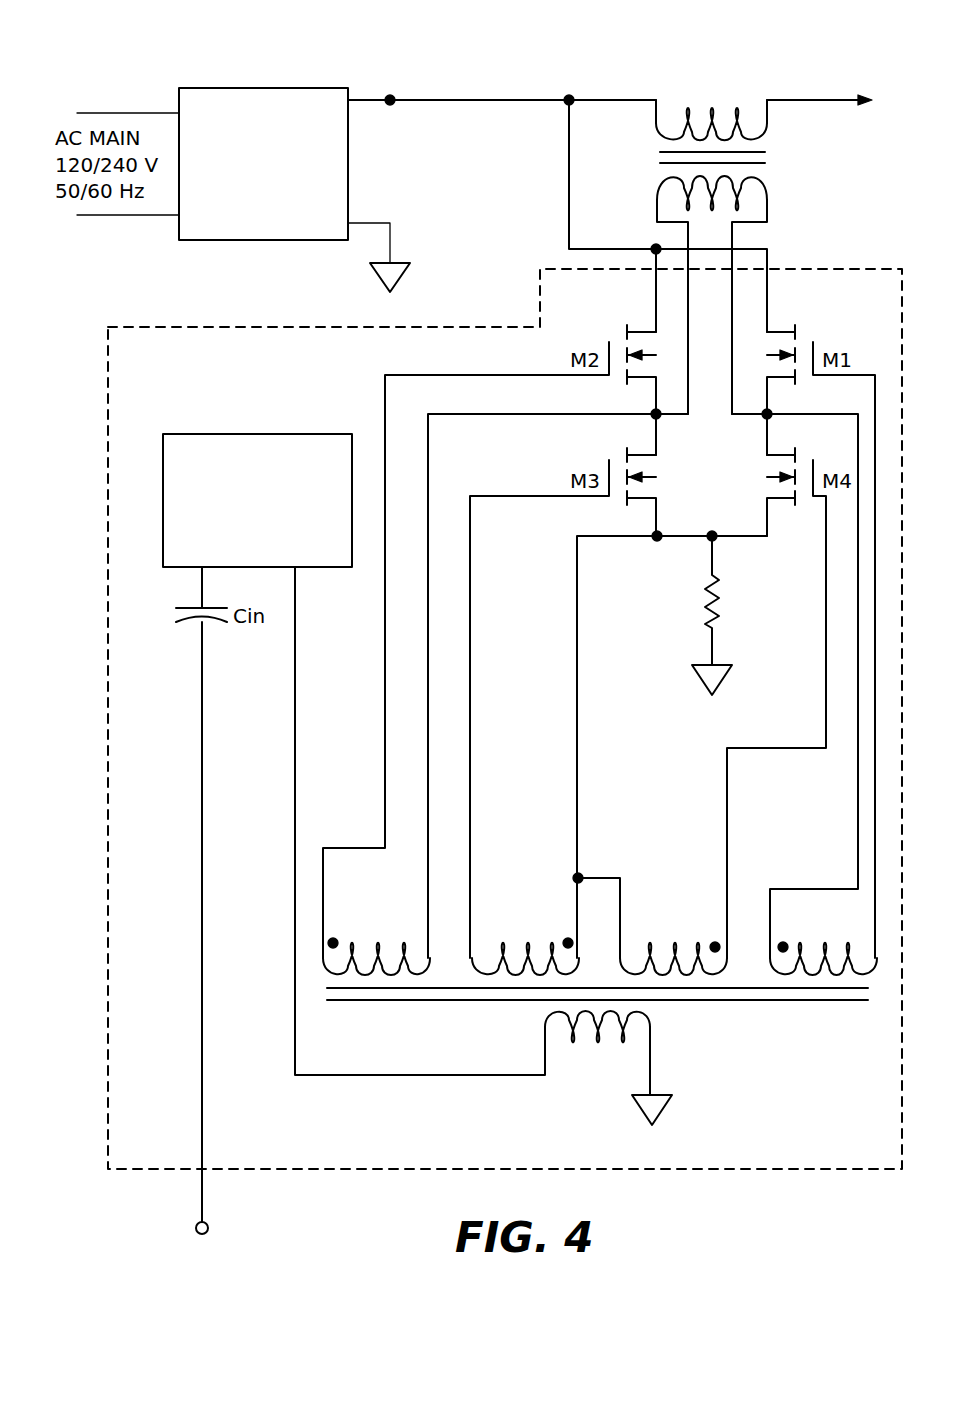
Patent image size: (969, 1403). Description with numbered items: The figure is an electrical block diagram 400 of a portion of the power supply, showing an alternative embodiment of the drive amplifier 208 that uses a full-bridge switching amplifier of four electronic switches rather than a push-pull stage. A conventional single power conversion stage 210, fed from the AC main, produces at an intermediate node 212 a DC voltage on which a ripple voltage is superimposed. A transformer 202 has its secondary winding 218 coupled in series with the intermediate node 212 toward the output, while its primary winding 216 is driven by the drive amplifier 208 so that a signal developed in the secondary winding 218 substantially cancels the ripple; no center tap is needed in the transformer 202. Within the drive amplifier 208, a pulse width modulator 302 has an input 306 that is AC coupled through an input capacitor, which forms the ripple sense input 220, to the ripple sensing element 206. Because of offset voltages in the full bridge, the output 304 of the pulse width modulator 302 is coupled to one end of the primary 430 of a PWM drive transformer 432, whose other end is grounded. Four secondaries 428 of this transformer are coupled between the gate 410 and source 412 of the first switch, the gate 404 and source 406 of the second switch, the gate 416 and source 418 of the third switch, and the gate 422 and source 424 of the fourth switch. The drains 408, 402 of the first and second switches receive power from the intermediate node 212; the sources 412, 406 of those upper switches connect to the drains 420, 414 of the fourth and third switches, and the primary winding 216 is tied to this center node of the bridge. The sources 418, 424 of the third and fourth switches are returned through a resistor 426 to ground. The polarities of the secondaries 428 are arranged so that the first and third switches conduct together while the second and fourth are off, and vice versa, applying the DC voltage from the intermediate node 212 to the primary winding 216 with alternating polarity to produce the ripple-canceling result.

The single power conversion stage 210 is at (298, 87).
The intermediate node 212 is at (390, 96).
The secondary winding 218 is at (687, 115).
The primary winding 216 is at (655, 188).
The transformer 202 is at (703, 238).
The drive amplifier 208 is at (275, 325).
The pulse width modulator 302 is at (263, 433).
The output of the pulse width modulator 304 is at (297, 570).
The input of the pulse width modulator 306 is at (200, 577).
The drain of electronic switch M2 402 is at (642, 330).
The gate of electronic switch M2 404 is at (608, 342).
The source of electronic switch M2 406 is at (640, 385).
The drain of electronic switch M1 408 is at (783, 333).
The gate of electronic switch M1 410 is at (817, 342).
The source of electronic switch M1 412 is at (780, 385).
The drain of electronic switch M3 414 is at (637, 452).
The gate of electronic switch M3 416 is at (566, 468).
The source of electronic switch M3 418 is at (640, 505).
The drain of electronic switch M4 420 is at (780, 455).
The gate of electronic switch M4 422 is at (833, 457).
The source of electronic switch M4 424 is at (780, 500).
The resistor 426 is at (717, 602).
The secondaries of the PWM drive transformer 428 is at (350, 947).
The primary of the PWM drive transformer 430 is at (598, 1037).
The PWM drive transformer 432 is at (737, 998).
The ripple sense input 220 is at (200, 1175).
The ripple sensing element 206 is at (207, 1220).
The electrical block diagram 400 is at (505, 751).